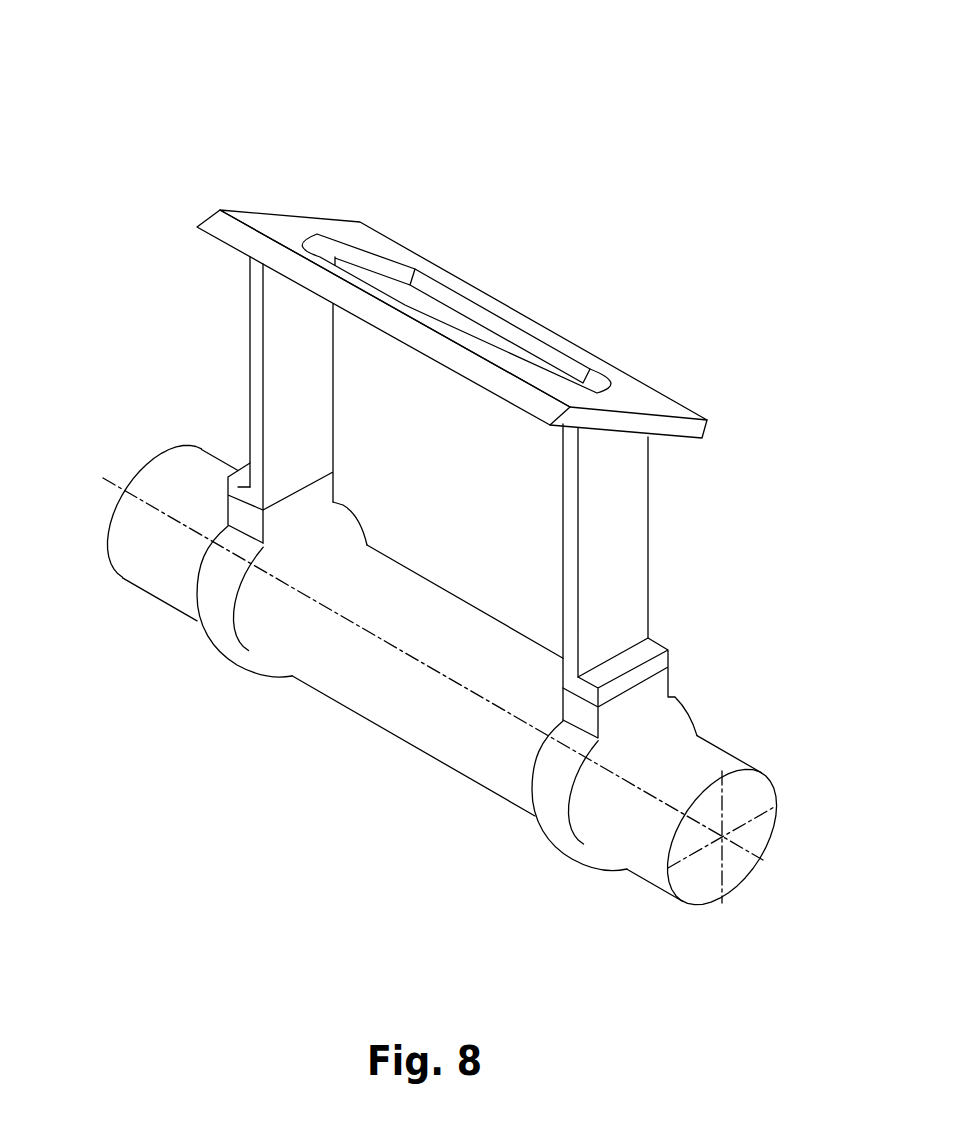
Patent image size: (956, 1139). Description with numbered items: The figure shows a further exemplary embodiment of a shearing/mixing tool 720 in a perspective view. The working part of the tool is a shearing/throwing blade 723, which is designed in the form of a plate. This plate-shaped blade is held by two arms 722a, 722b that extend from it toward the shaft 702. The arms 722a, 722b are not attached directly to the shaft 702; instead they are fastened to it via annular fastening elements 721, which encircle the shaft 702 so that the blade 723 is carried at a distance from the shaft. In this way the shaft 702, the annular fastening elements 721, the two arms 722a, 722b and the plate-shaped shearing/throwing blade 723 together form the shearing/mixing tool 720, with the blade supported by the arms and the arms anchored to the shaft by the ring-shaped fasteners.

The shearing/mixing tool 720 is at (253, 154).
The shaft 702 is at (380, 690).
The annular fastening elements 721 is at (553, 782).
The arm 722a is at (622, 493).
The arm 722b is at (288, 347).
The shearing/throwing blade 723 is at (626, 386).